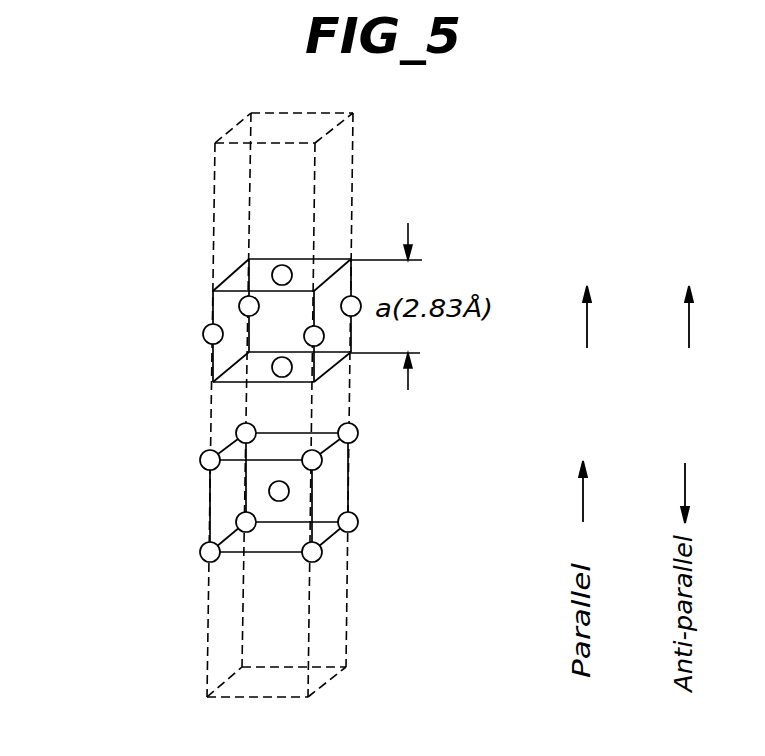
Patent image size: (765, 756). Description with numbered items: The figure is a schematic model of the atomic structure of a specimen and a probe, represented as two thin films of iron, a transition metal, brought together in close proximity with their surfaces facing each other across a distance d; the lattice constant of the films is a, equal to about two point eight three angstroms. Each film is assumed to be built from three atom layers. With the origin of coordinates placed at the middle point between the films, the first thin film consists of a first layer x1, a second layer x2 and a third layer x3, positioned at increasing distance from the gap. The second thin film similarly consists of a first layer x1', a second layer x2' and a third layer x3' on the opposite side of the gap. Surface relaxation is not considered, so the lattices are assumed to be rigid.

The third layer x3 is at (173, 295).
The second layer x2 is at (128, 334).
The first layer x1 is at (173, 383).
The first layer x1' is at (126, 464).
The second layer x2' is at (161, 495).
The third layer x3' is at (126, 554).